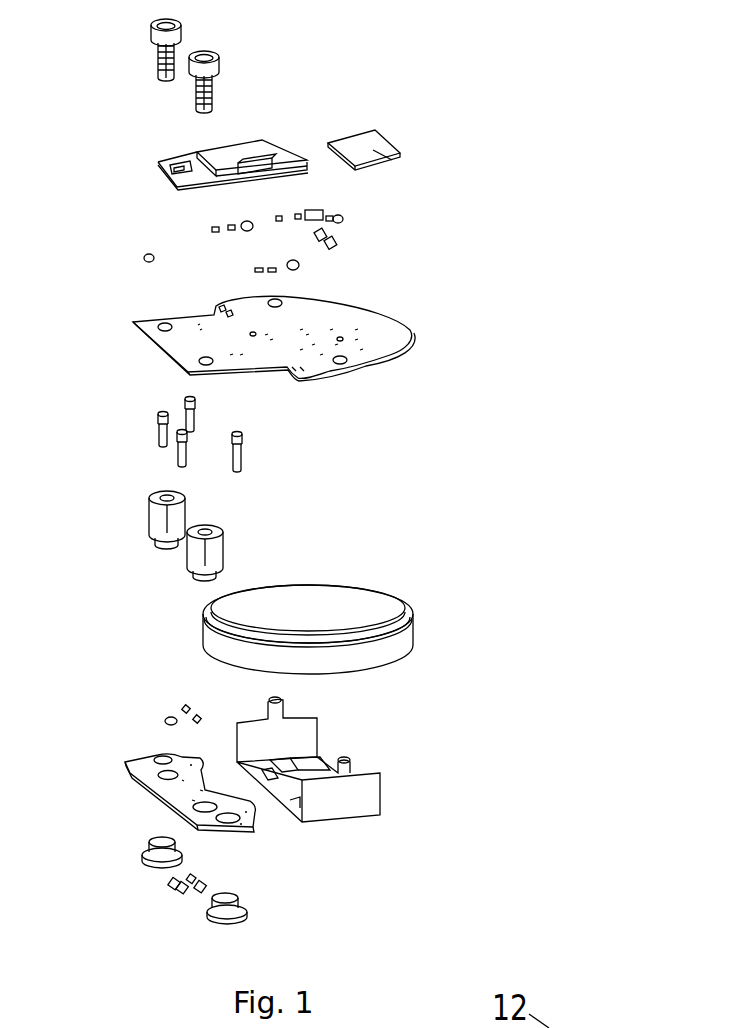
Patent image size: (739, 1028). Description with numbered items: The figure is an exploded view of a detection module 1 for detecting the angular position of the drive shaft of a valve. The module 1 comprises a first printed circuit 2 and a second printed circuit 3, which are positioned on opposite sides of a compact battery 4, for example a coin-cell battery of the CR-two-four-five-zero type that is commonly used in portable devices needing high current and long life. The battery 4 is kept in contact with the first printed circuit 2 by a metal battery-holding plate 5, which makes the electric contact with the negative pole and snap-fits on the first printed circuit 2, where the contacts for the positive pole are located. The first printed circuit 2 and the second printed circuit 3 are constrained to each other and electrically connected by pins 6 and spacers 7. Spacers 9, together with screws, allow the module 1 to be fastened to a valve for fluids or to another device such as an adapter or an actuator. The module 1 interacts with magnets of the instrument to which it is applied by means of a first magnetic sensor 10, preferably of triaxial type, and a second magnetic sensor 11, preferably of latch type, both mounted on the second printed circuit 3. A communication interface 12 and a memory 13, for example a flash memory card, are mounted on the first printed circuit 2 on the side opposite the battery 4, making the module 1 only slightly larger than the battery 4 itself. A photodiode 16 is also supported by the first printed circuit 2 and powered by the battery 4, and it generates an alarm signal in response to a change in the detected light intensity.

The detection module 1 is at (547, 550).
The first printed circuit 2 is at (138, 322).
The second printed circuit 3 is at (130, 765).
The battery 4 is at (203, 638).
The metal battery-holding plate 5 is at (365, 797).
The pins 6 is at (141, 440).
The spacers 7 is at (194, 555).
The spacers 9 is at (148, 850).
The first magnetic sensor 10 is at (172, 890).
The second magnetic sensor 11 is at (168, 717).
The communication interface 12 is at (160, 170).
The memory 13 is at (373, 150).
The photodiode 16 is at (296, 270).